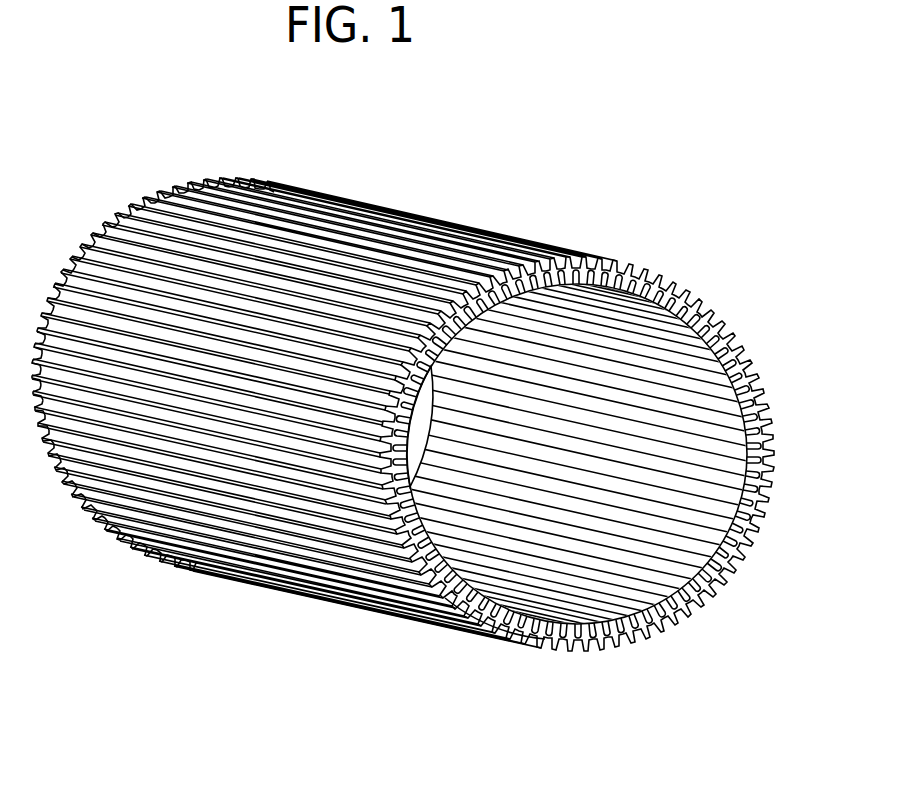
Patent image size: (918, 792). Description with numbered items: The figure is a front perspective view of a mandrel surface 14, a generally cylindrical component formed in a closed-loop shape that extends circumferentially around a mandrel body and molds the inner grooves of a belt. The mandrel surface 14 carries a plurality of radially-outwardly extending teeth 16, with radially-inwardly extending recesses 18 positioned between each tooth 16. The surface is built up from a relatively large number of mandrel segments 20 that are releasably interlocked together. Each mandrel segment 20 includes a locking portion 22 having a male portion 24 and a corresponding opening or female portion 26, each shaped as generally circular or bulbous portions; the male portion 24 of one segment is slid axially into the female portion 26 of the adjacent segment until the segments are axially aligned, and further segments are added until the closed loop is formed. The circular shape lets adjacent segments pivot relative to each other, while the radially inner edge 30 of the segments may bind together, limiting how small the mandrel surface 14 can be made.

The mandrel surface 14 is at (591, 222).
The teeth 16 is at (646, 263).
The recesses 18 is at (581, 477).
The mandrel segments 20 is at (734, 340).
The locking portion 22 is at (553, 648).
The male portion 24 is at (523, 642).
The female portion 26 is at (468, 612).
The radially inner edge 30 is at (554, 286).